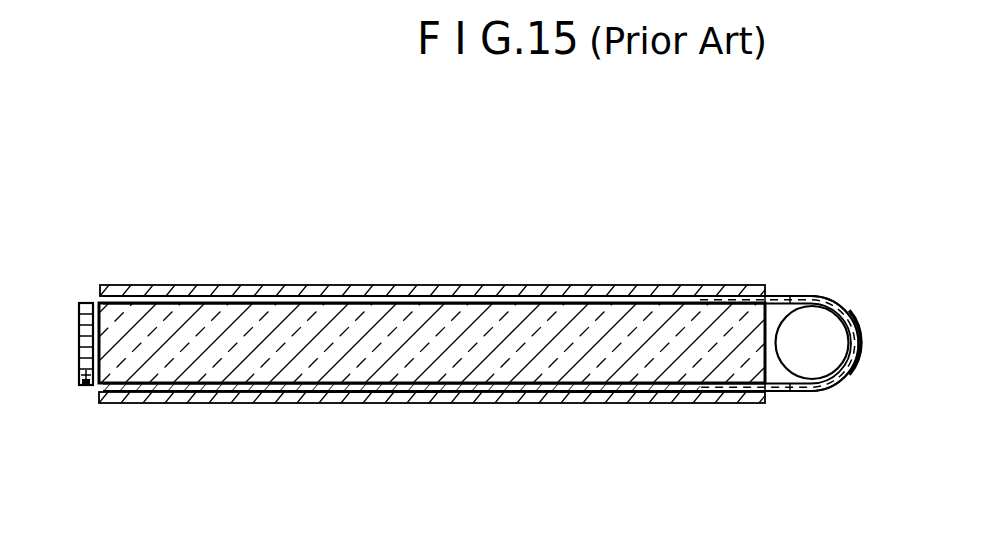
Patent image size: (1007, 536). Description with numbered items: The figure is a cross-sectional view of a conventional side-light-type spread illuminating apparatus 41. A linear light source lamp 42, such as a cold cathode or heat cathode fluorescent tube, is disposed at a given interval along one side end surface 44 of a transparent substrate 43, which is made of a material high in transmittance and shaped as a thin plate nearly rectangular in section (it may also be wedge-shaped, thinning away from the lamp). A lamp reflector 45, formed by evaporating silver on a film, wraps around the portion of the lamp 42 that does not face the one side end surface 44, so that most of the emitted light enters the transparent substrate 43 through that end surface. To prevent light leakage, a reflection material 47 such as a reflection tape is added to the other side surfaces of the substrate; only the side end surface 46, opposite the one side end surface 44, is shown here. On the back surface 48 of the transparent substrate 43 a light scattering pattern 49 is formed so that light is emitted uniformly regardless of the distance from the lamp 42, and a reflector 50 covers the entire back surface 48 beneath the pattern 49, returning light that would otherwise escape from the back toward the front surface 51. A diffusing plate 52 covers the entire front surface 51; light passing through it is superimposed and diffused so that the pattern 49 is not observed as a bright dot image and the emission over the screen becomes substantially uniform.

The spread illuminating apparatus 41 is at (496, 250).
The light source lamp 42 is at (810, 363).
The transparent substrate 43 is at (362, 320).
The one side end surface 44 is at (782, 296).
The lamp reflector 45 is at (856, 310).
The side end surface 46 is at (113, 309).
The reflection material 47 is at (88, 387).
The back surface 48 is at (490, 384).
The light scattering pattern 49 is at (365, 392).
The reflector 50 is at (263, 403).
The front surface 51 is at (570, 297).
The diffusing plate 52 is at (258, 285).